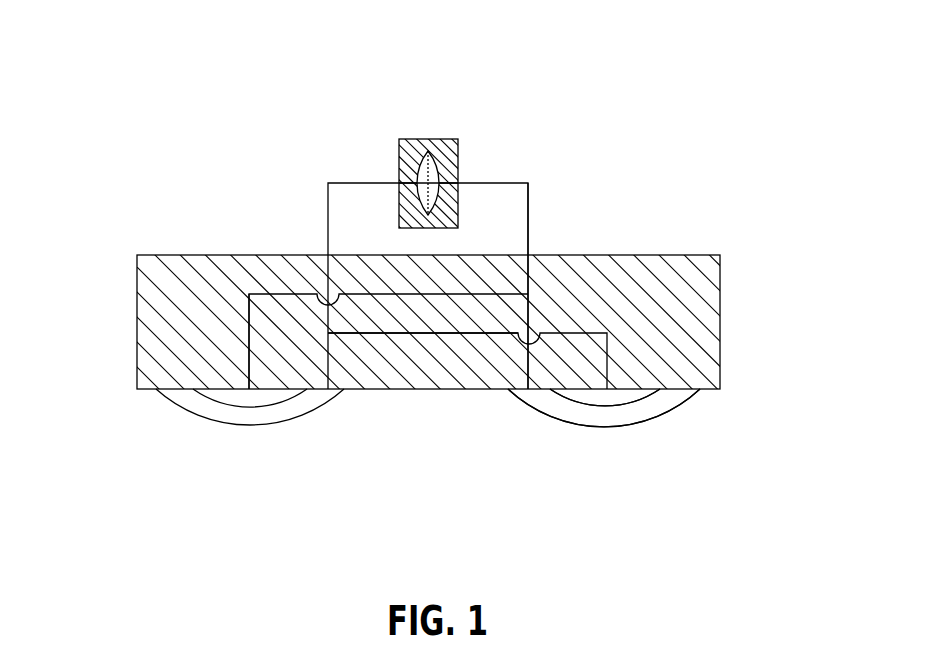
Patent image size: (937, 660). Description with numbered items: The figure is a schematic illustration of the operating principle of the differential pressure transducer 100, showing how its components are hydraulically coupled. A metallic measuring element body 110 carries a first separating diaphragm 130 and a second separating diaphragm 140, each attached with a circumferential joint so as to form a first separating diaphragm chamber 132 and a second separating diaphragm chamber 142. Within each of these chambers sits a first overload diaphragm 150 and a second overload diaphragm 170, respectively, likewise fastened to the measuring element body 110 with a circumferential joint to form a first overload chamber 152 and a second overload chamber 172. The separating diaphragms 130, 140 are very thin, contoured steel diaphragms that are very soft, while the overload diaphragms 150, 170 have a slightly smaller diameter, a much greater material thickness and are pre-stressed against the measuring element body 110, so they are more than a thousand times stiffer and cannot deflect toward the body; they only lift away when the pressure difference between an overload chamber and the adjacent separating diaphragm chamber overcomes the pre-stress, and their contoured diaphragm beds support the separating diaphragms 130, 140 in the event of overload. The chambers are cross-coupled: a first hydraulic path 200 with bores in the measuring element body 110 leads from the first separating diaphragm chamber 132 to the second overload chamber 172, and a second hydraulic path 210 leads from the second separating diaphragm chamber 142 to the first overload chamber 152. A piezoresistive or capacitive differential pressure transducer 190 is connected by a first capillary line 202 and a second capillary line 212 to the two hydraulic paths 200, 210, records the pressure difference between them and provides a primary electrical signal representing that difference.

The differential pressure transducer 100 is at (213, 103).
The measuring element body 110 is at (720, 317).
The first separating diaphragm 130 is at (167, 403).
The first separating diaphragm chamber 132 is at (192, 402).
The second separating diaphragm 140 is at (587, 423).
The second separating diaphragm chamber 142 is at (617, 413).
The first overload diaphragm 150 is at (272, 400).
The first overload chamber 152 is at (243, 392).
The second overload diaphragm 170 is at (652, 396).
The second overload chamber 172 is at (631, 396).
The differential pressure transducer 190 is at (458, 139).
The first hydraulic path 200 is at (422, 337).
The first capillary line 202 is at (327, 218).
The second hydraulic path 210 is at (473, 297).
The second capillary line 212 is at (530, 220).